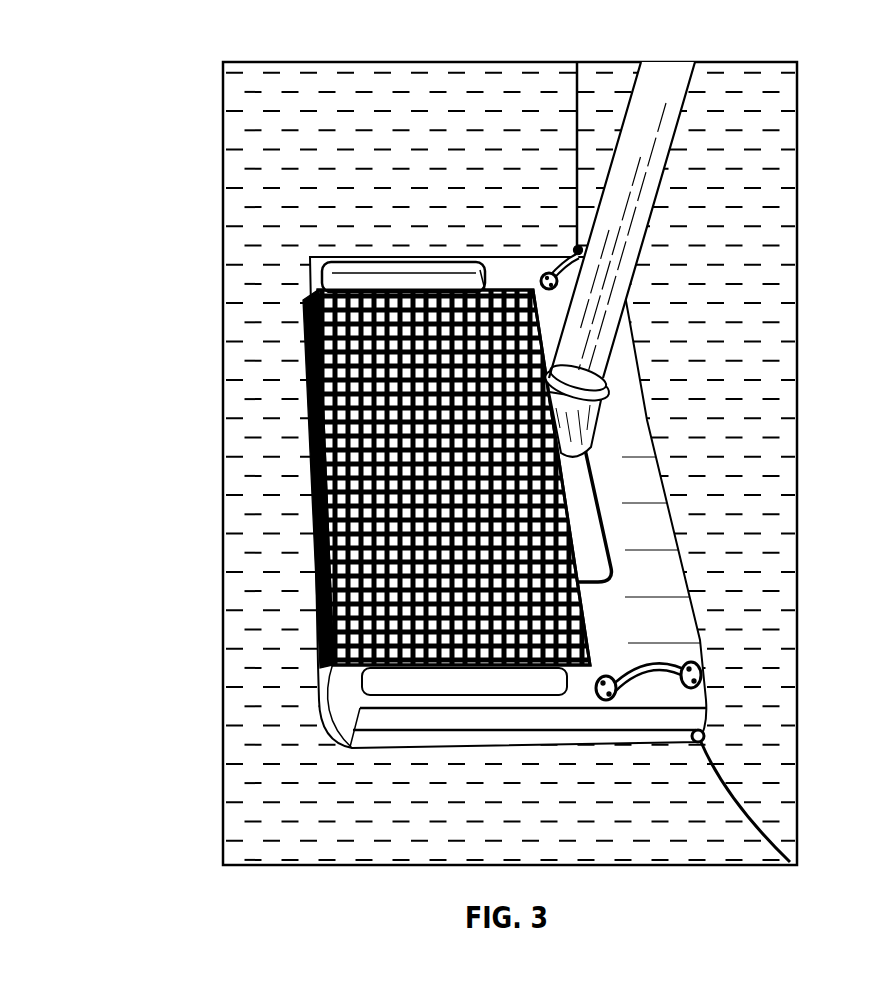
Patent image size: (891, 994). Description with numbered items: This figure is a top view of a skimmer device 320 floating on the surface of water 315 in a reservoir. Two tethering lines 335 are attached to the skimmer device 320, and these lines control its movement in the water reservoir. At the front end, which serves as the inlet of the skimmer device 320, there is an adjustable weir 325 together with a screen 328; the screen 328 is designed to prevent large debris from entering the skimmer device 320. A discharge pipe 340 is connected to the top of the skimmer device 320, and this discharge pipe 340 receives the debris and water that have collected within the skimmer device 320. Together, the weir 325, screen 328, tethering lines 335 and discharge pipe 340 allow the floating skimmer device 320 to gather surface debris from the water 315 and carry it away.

The tank / water container 315 is at (517, 822).
The tray base 320 is at (640, 437).
The basket 325 is at (385, 545).
The mesh screen 328 is at (360, 355).
The cable / tether 335 is at (577, 100).
The pole / wand 340 is at (673, 143).